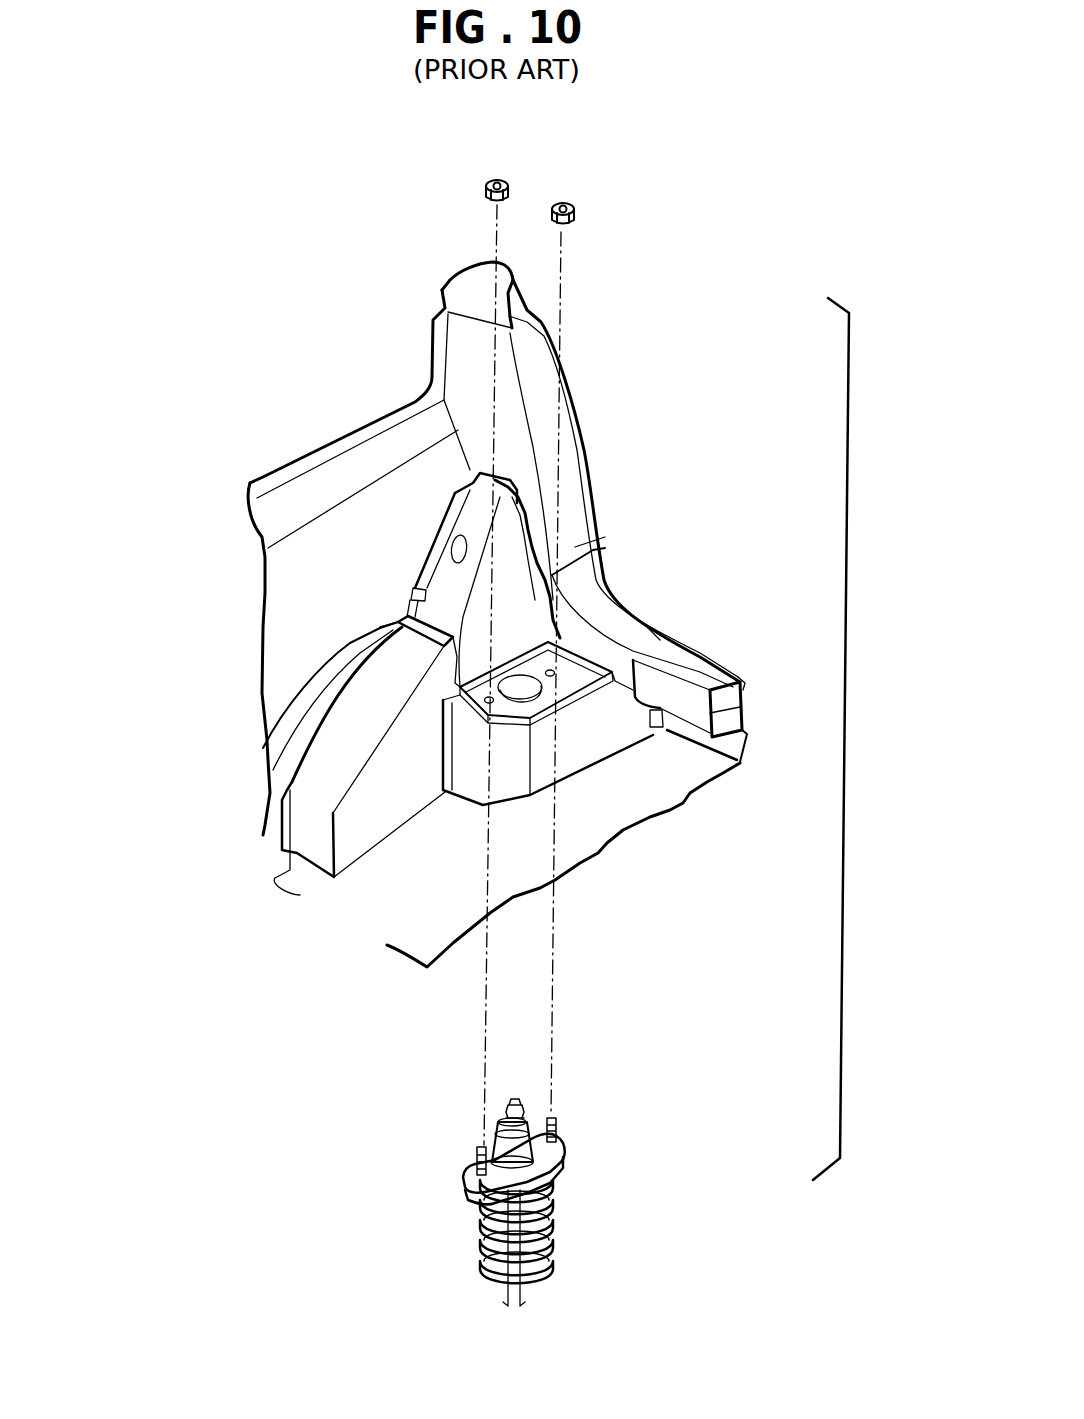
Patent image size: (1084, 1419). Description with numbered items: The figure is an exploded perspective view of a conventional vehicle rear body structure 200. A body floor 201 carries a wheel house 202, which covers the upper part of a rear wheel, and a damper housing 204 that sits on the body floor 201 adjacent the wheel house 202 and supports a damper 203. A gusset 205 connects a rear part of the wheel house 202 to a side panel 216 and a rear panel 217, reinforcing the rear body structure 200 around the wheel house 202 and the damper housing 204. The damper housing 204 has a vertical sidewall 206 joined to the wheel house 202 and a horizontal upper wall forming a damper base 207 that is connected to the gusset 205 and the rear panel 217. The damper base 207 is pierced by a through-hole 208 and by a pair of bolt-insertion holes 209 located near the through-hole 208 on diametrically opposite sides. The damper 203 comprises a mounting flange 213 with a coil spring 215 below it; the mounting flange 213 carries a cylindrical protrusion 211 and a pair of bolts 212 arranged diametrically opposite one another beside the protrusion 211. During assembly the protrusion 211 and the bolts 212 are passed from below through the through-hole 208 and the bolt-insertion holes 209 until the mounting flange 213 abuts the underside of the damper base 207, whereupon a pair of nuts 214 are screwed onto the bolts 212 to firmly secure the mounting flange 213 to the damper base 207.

The rear body structure 200 is at (268, 289).
The body floor 201 is at (672, 765).
The wheel house 202 is at (352, 738).
The damper 203 is at (622, 1092).
The damper housing 204 is at (616, 663).
The gusset 205 is at (512, 555).
The vertical sidewall 206 is at (468, 785).
The damper base 207 is at (583, 668).
The through-hole 208 is at (545, 690).
The bolt-insertion holes 209 is at (558, 678).
The cylindrical protrusion 211 is at (527, 1115).
The bolts 212 is at (553, 1125).
The mounting flange 213 is at (567, 1150).
The nuts 214 is at (503, 188).
The coil spring 215 is at (553, 1222).
The side panel 216 is at (317, 550).
The rear panel 217 is at (523, 450).